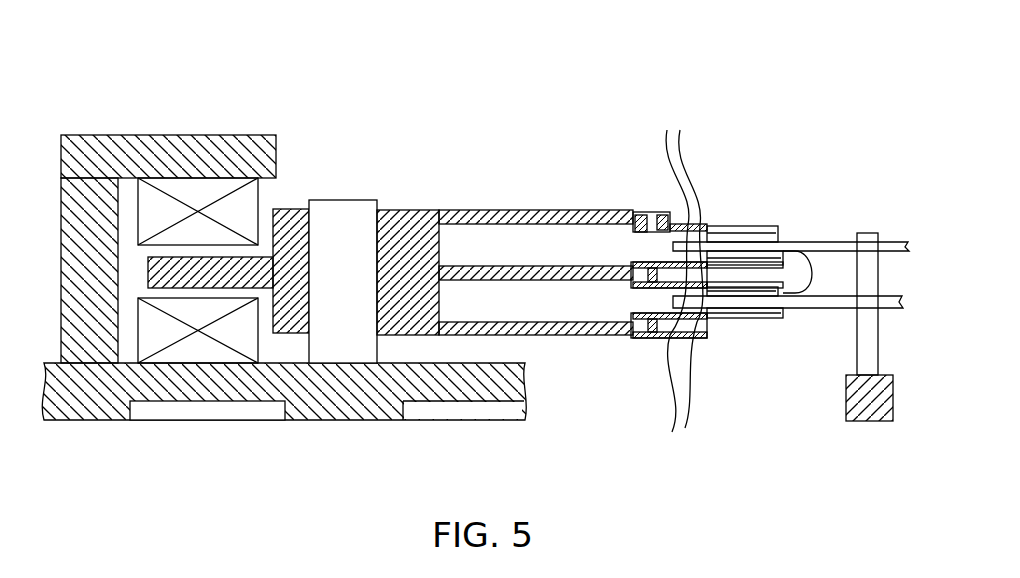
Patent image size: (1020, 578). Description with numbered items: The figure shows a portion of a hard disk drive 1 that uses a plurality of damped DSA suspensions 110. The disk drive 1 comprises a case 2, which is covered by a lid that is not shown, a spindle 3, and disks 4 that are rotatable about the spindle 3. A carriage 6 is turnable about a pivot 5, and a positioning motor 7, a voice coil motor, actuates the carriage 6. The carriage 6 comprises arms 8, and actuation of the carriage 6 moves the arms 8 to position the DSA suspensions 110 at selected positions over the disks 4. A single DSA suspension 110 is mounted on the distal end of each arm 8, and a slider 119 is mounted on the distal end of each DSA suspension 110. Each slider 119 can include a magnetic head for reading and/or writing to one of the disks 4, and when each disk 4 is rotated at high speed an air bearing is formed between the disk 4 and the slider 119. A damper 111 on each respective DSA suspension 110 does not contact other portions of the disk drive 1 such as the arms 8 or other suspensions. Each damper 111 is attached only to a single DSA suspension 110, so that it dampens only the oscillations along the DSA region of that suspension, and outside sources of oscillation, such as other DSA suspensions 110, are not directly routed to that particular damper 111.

The hard disk drive 1 is at (197, 80).
The case 2 is at (87, 422).
The spindle 3 is at (877, 232).
The disks 4 is at (832, 243).
The pivot 5 is at (337, 210).
The carriage 6 is at (512, 198).
The positioning motor 7 is at (215, 359).
The arms 8 is at (565, 208).
The DSA suspension 110 is at (742, 228).
The damper 111 is at (682, 283).
The slider 119 is at (786, 240).